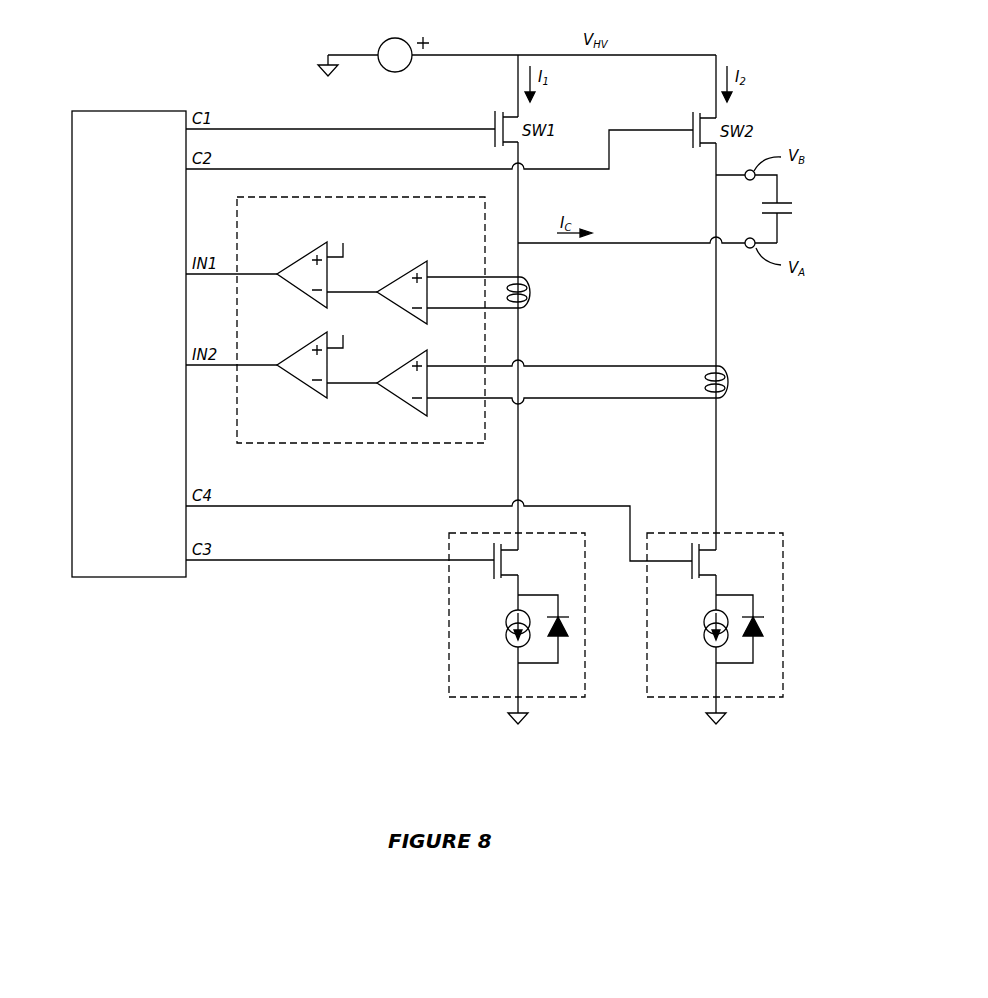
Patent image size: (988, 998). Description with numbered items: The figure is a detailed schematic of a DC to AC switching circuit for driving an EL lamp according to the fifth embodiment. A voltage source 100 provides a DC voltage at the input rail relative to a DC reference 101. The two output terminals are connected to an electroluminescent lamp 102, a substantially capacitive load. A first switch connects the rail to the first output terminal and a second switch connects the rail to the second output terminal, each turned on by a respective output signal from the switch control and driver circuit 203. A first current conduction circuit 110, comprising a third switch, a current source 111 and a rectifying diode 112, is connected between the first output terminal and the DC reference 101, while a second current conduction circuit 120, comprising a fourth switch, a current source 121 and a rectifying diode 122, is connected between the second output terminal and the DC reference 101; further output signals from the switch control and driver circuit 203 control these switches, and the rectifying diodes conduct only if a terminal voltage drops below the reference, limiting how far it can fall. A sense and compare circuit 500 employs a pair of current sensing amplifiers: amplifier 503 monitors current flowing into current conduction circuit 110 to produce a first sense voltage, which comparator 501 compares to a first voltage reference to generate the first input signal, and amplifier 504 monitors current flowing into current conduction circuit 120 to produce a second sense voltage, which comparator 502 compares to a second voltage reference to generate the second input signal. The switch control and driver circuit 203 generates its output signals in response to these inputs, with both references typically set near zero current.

The voltage source 100 is at (384, 40).
The switch control and driver circuit 203 is at (72, 163).
The sense and compare circuit 500 is at (360, 448).
The comparator 501 is at (293, 258).
The comparator 502 is at (293, 347).
The amplifier 503 is at (427, 262).
The amplifier 504 is at (396, 402).
The electroluminescent lamp 102 is at (793, 196).
The first current conduction circuit 110 is at (495, 623).
The current source 111 is at (504, 630).
The rectifying diode 112 is at (562, 641).
The DC reference 101 is at (508, 717).
The second current conduction circuit 120 is at (739, 628).
The current source 121 is at (702, 630).
The rectifying diode 122 is at (758, 641).